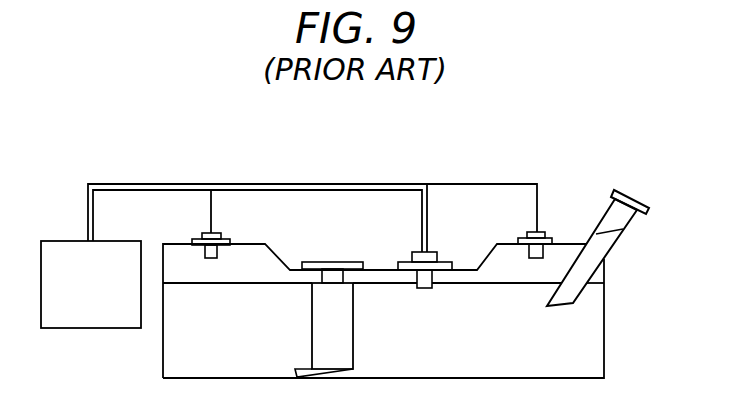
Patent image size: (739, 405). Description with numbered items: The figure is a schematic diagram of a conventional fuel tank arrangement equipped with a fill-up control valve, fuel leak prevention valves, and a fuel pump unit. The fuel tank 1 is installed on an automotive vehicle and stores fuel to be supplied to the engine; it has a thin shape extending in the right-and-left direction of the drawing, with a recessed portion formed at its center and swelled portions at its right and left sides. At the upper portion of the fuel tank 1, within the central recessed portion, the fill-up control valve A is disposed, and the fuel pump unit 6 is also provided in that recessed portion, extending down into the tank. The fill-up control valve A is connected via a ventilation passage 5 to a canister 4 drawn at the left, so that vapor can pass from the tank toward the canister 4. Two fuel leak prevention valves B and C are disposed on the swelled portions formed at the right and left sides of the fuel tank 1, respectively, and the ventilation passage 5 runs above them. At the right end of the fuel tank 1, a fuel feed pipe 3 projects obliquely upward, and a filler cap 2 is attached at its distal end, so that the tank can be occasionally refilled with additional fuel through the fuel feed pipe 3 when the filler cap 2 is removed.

The fuel tank 1 is at (446, 343).
The filler cap 2 is at (613, 192).
The fuel feed pipe 3 is at (614, 252).
The canister 4 is at (101, 314).
The ventilation passage 5 is at (349, 184).
The fuel pump unit 6 is at (342, 332).
The fill-up control valve A is at (425, 259).
The fuel leak prevention valve B is at (535, 234).
The fuel leak prevention valve C is at (209, 234).